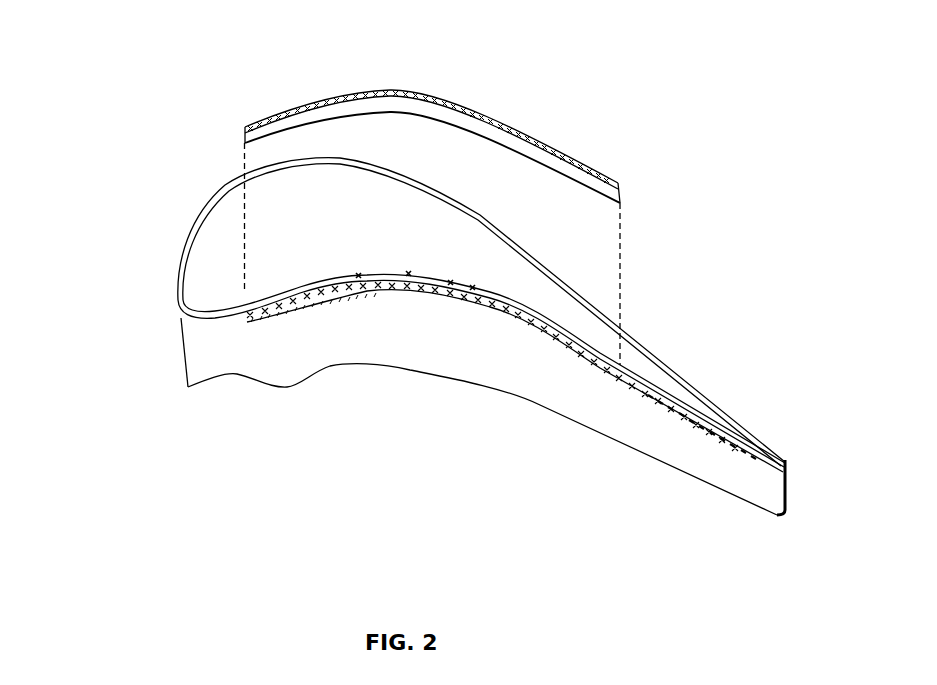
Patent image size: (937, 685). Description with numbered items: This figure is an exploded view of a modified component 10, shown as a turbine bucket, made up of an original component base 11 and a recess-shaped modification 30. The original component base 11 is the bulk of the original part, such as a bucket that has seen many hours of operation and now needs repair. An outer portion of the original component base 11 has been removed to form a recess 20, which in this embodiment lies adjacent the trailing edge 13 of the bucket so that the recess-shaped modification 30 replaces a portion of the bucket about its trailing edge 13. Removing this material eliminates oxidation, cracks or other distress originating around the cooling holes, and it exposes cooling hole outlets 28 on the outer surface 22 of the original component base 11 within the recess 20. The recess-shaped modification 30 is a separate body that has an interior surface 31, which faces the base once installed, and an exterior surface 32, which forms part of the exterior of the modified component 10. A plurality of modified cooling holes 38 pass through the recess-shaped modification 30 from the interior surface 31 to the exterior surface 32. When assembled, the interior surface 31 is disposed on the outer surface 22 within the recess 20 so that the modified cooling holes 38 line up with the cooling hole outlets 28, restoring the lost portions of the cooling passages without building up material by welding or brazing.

The modified component 10 is at (154, 122).
The original component base 11 is at (197, 333).
The trailing edge 13 is at (785, 495).
The recess 20 is at (302, 292).
The outer surface 22 is at (345, 282).
The cooling hole outlets 28 is at (428, 288).
The recess-shaped modification 30 is at (491, 100).
The interior surface 31 is at (542, 165).
The exterior surface 32 is at (585, 167).
The modified cooling holes 38 is at (290, 108).